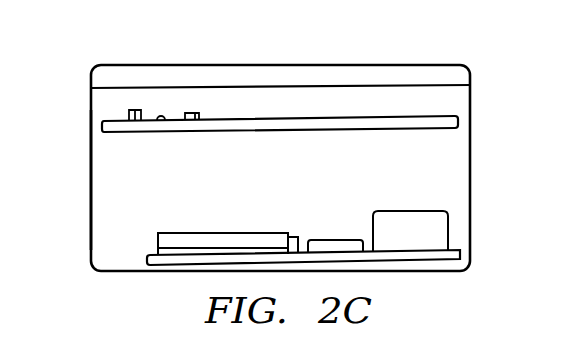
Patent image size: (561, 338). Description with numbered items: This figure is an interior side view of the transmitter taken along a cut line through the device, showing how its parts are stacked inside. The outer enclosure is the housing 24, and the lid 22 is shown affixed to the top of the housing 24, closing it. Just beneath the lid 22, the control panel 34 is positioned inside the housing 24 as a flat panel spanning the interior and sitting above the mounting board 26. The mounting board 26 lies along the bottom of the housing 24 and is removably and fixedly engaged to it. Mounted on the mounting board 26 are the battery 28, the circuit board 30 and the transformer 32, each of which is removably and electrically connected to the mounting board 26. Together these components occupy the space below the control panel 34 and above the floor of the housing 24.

The lid 22 is at (278, 65).
The housing 24 is at (92, 174).
The mounting board 26 is at (147, 258).
The battery 28 is at (224, 232).
The circuit board 30 is at (333, 240).
The transformer 32 is at (410, 210).
The control panel 34 is at (279, 131).